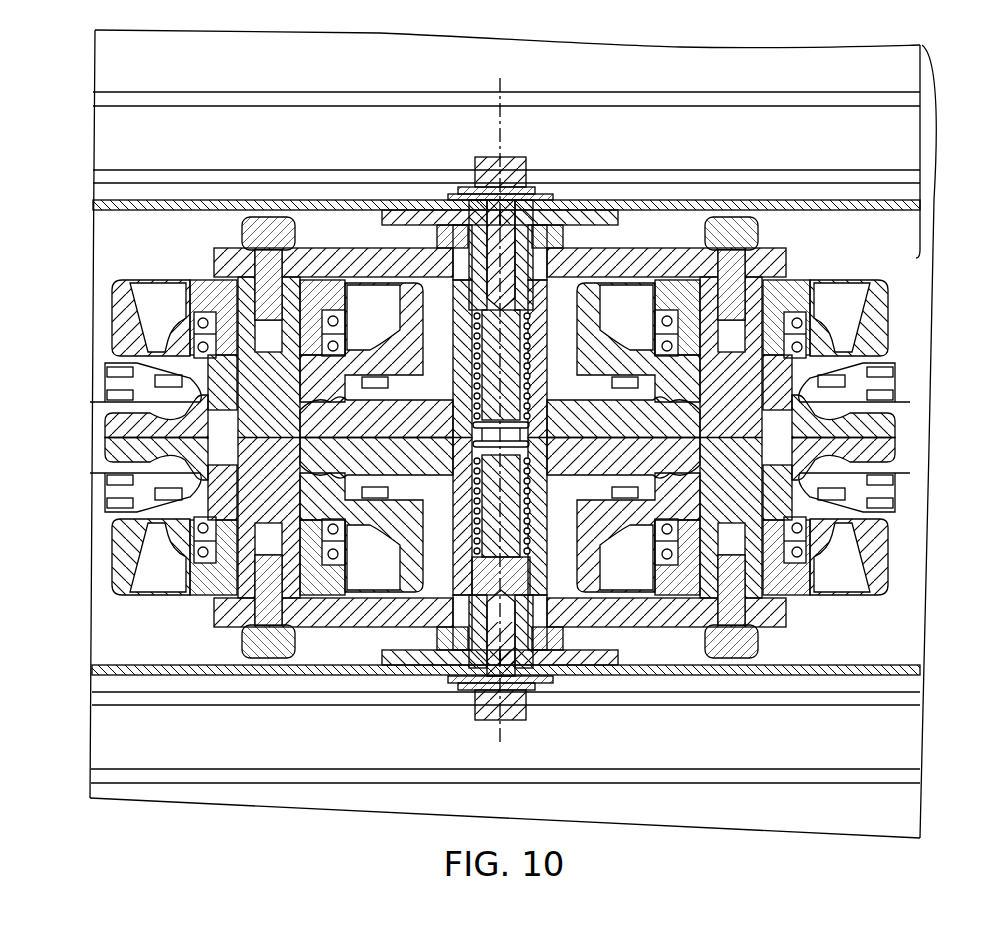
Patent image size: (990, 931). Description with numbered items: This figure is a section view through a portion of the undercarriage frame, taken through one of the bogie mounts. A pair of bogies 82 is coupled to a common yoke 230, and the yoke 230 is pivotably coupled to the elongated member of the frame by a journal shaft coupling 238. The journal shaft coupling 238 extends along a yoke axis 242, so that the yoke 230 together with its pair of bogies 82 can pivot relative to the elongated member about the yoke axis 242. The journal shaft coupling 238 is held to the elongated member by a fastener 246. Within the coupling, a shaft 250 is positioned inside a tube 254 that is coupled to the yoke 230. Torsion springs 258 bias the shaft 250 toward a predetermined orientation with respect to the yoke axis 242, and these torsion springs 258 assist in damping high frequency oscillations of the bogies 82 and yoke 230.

The bogie 82 is at (128, 330).
The yoke 230 is at (327, 260).
The journal shaft coupling 238 is at (570, 196).
The yoke axis 242 is at (504, 116).
The fastener 246 is at (487, 164).
The shaft 250 is at (518, 295).
The tube 254 is at (463, 540).
The torsion springs 258 is at (447, 405).